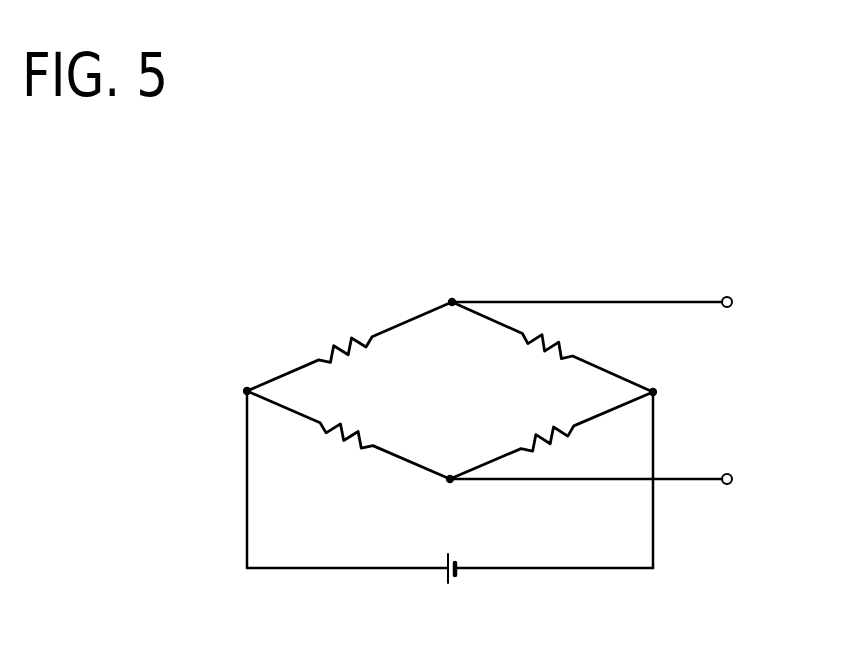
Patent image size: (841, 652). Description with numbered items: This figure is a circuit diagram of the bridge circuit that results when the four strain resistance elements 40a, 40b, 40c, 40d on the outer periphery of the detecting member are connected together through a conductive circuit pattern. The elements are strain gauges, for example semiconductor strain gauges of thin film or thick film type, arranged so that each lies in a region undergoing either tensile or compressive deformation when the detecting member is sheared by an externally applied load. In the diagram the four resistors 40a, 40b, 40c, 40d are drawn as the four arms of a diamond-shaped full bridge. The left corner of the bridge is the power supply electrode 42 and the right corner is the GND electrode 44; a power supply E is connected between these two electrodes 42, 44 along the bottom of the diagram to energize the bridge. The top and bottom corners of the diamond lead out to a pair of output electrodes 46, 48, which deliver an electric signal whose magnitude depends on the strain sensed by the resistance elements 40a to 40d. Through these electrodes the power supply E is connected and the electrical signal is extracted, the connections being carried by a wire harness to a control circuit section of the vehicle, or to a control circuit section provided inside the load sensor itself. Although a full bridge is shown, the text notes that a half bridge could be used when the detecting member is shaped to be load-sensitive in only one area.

The strain resistance element 40a is at (341, 348).
The strain resistance element 40b is at (347, 440).
The strain resistance element 40c is at (548, 352).
The strain resistance element 40d is at (548, 440).
The power supply electrode 42 is at (246, 389).
The GND electrode 44 is at (655, 389).
The output electrode 46 is at (731, 298).
The output electrode 48 is at (729, 484).
The power supply E is at (450, 591).